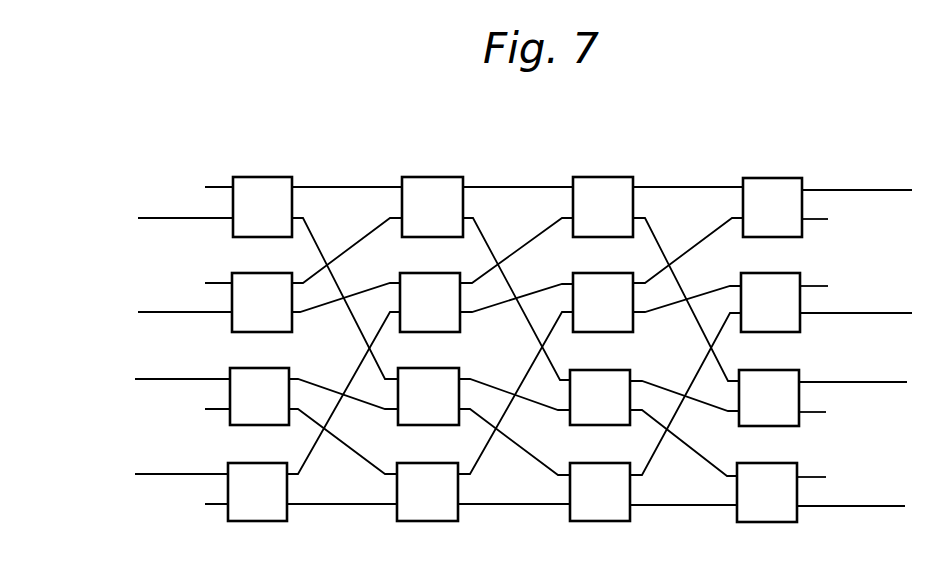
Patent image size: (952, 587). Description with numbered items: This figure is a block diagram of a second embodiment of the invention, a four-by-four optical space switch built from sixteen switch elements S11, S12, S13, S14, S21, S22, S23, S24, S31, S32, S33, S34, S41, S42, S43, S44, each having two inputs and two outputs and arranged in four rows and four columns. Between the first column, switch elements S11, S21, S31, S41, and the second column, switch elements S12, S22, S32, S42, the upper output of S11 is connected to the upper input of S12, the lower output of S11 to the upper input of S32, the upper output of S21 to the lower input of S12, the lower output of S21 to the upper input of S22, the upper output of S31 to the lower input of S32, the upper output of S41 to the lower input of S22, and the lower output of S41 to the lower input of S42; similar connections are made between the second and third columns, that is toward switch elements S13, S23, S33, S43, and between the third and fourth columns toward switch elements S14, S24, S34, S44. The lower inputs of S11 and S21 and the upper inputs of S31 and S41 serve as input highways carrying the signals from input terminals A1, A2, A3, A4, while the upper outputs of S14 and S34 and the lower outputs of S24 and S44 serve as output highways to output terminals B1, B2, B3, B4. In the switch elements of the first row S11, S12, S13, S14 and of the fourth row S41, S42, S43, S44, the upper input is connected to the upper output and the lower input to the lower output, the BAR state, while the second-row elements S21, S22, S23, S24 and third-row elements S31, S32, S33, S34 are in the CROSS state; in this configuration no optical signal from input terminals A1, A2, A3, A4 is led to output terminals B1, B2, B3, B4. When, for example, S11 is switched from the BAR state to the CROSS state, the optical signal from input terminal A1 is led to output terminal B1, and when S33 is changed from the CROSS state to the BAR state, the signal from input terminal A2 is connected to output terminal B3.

The switch element S11 is at (303, 264).
The switch element S12 is at (487, 264).
The switch element S13 is at (658, 265).
The switch element S14 is at (785, 193).
The switch element S21 is at (303, 275).
The switch element S22 is at (486, 275).
The switch element S23 is at (658, 275).
The switch element S24 is at (784, 290).
The switch element S31 is at (301, 409).
The switch element S32 is at (484, 409).
The switch element S33 is at (654, 410).
The switch element S34 is at (782, 385).
The switch element S41 is at (302, 416).
The switch element S42 is at (485, 416).
The switch element S43 is at (655, 417).
The switch element S44 is at (781, 480).
The input terminal A1 is at (168, 214).
The input terminal A2 is at (167, 311).
The input terminal A3 is at (166, 375).
The input terminal A4 is at (165, 470).
The output terminal B1 is at (874, 190).
The output terminal B2 is at (873, 314).
The output terminal B3 is at (870, 382).
The output terminal B4 is at (868, 507).